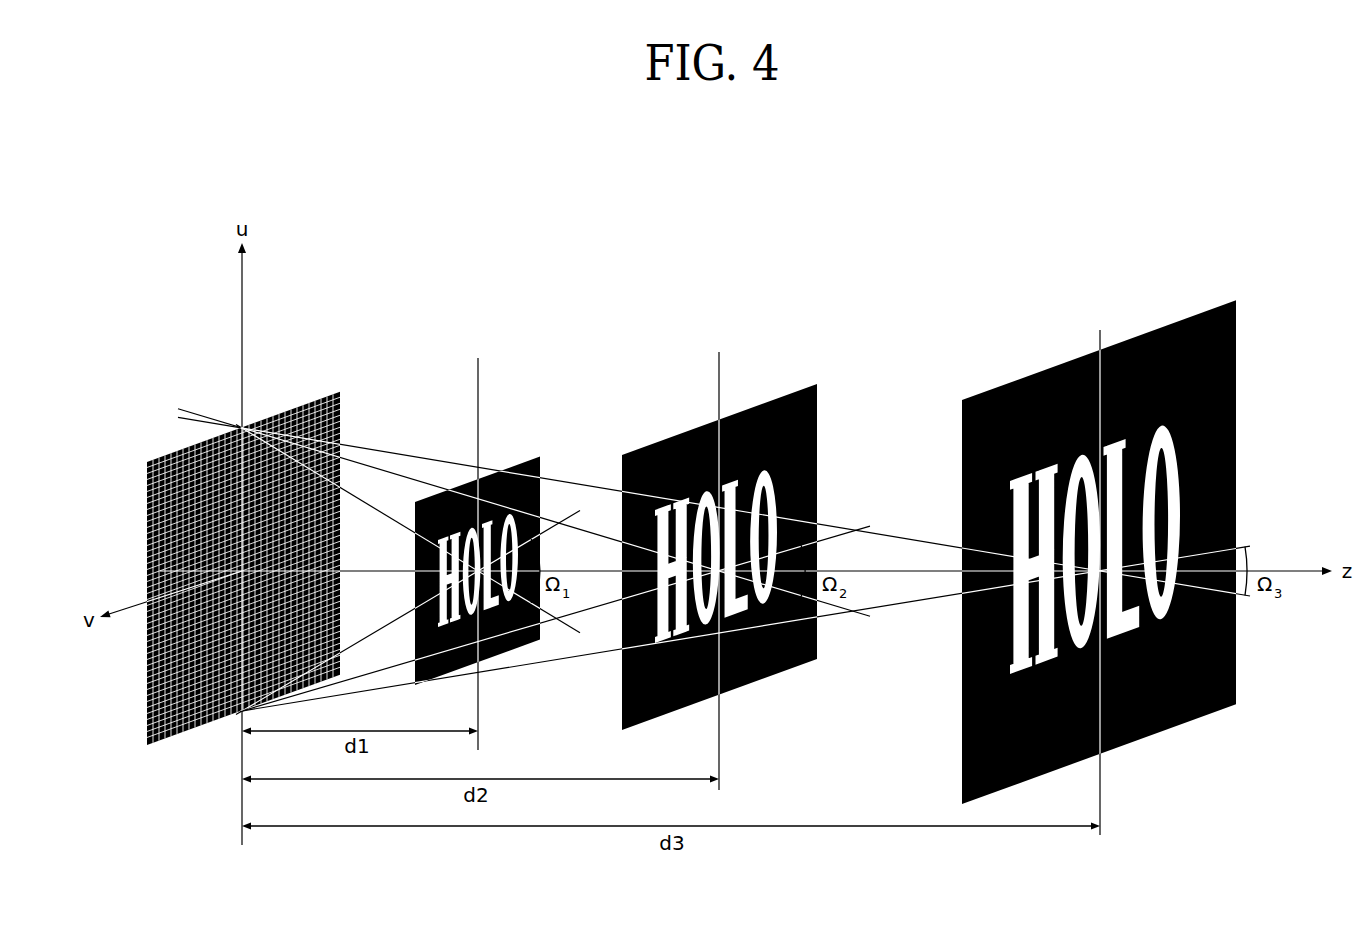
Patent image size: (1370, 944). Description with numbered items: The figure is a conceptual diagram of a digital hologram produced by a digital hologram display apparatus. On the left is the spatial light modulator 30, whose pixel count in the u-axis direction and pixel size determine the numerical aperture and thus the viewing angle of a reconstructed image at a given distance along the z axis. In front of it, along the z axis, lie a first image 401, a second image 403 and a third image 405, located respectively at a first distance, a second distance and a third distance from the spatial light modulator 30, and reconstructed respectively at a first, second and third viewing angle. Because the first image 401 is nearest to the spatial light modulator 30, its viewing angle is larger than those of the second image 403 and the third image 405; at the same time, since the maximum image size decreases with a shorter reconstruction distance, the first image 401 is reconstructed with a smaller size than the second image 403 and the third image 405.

The spatial light modulator 30 is at (298, 390).
The first image 401 is at (523, 454).
The second image 403 is at (781, 389).
The third image 405 is at (1188, 308).